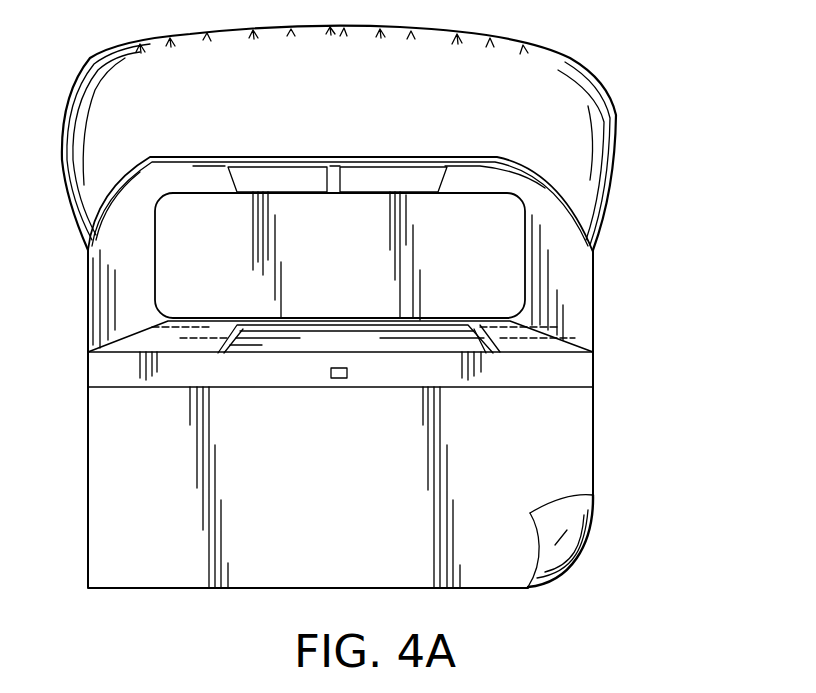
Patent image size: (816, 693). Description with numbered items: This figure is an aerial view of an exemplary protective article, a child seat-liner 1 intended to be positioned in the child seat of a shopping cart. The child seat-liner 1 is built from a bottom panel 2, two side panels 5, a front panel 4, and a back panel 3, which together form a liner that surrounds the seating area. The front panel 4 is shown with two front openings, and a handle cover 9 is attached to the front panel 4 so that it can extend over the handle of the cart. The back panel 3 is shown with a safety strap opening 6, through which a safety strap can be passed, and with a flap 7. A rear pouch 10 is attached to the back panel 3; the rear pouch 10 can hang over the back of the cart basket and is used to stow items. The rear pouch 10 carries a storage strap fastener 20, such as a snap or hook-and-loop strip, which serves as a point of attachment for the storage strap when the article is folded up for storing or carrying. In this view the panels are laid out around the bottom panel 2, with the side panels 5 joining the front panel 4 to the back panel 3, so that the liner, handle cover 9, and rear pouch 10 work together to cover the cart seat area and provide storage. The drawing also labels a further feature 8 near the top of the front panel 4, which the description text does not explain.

The child seat cover 1 is at (632, 165).
The window opening 2 is at (226, 243).
The ledge 3 is at (170, 326).
The headrest frame 4 is at (138, 172).
The side panel 5 is at (105, 272).
The tray 6 is at (470, 328).
The tray insert 7 is at (268, 342).
The pads 8 is at (268, 180).
The outer cover 9 is at (594, 117).
The lower panel 10 is at (558, 470).
The tag 20 is at (340, 378).